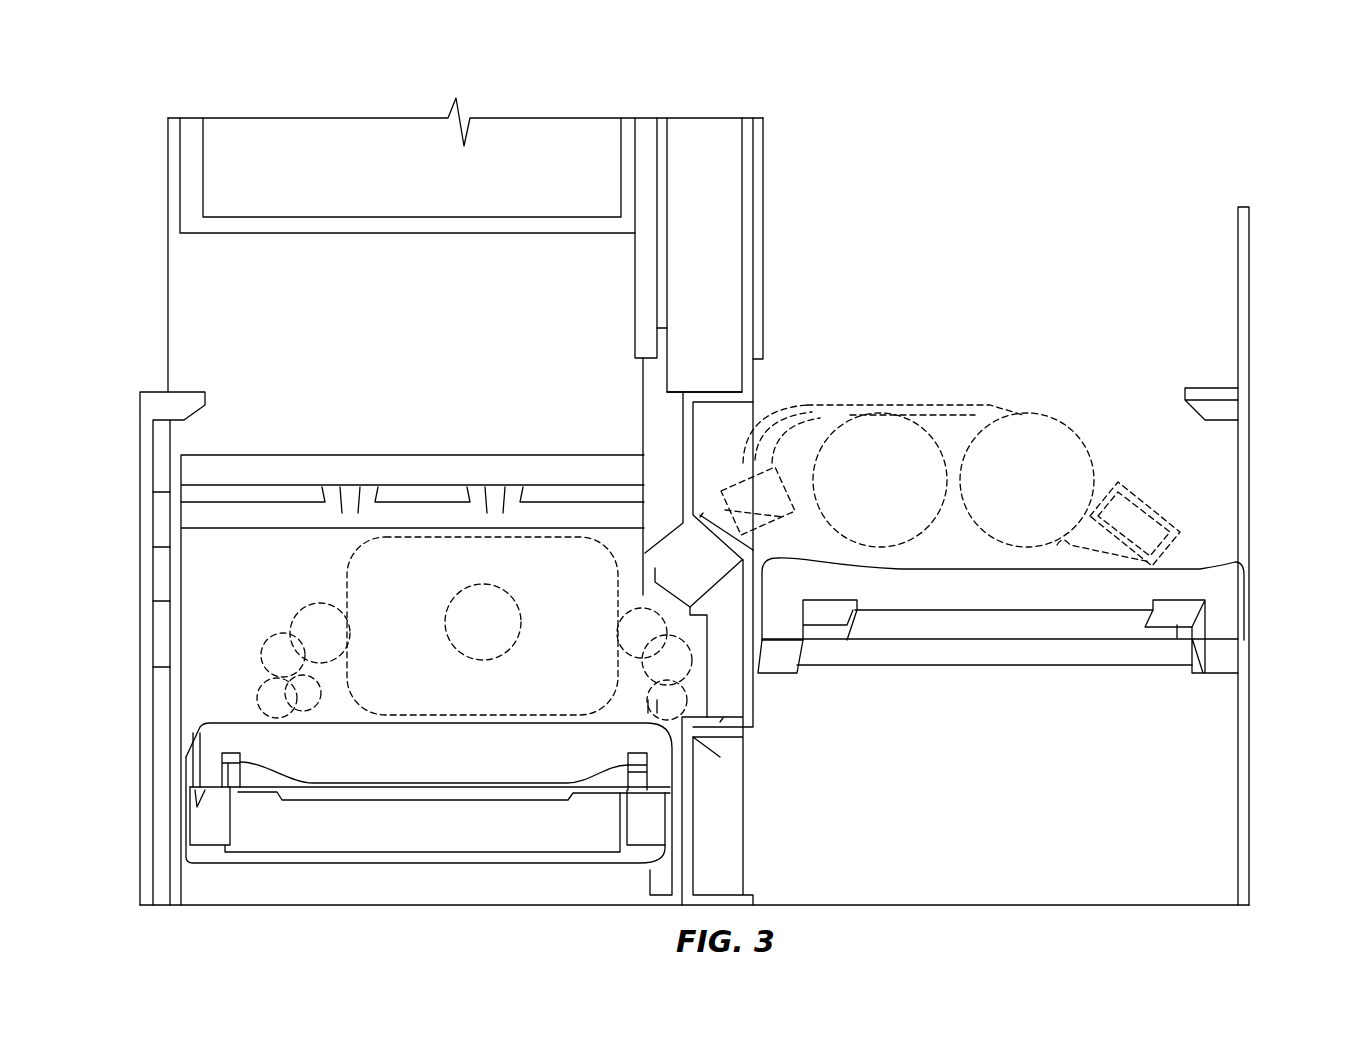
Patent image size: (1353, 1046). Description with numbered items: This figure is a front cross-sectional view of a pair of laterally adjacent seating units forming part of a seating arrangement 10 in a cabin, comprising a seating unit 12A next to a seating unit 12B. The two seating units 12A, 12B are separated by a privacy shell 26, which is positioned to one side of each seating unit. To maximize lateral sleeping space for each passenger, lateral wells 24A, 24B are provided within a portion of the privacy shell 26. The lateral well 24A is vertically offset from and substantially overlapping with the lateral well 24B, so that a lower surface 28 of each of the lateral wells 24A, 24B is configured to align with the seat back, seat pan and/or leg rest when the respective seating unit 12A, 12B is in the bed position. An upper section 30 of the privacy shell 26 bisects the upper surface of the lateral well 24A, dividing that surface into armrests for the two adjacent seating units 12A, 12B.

The seating arrangement 10 is at (1258, 172).
The seating unit 12A is at (1249, 305).
The seating unit 12B is at (148, 680).
The lateral well 24A is at (705, 438).
The lateral well 24B is at (700, 712).
The privacy shell 26 is at (751, 125).
The lower surface 28 is at (703, 513).
The upper section 30 is at (745, 258).